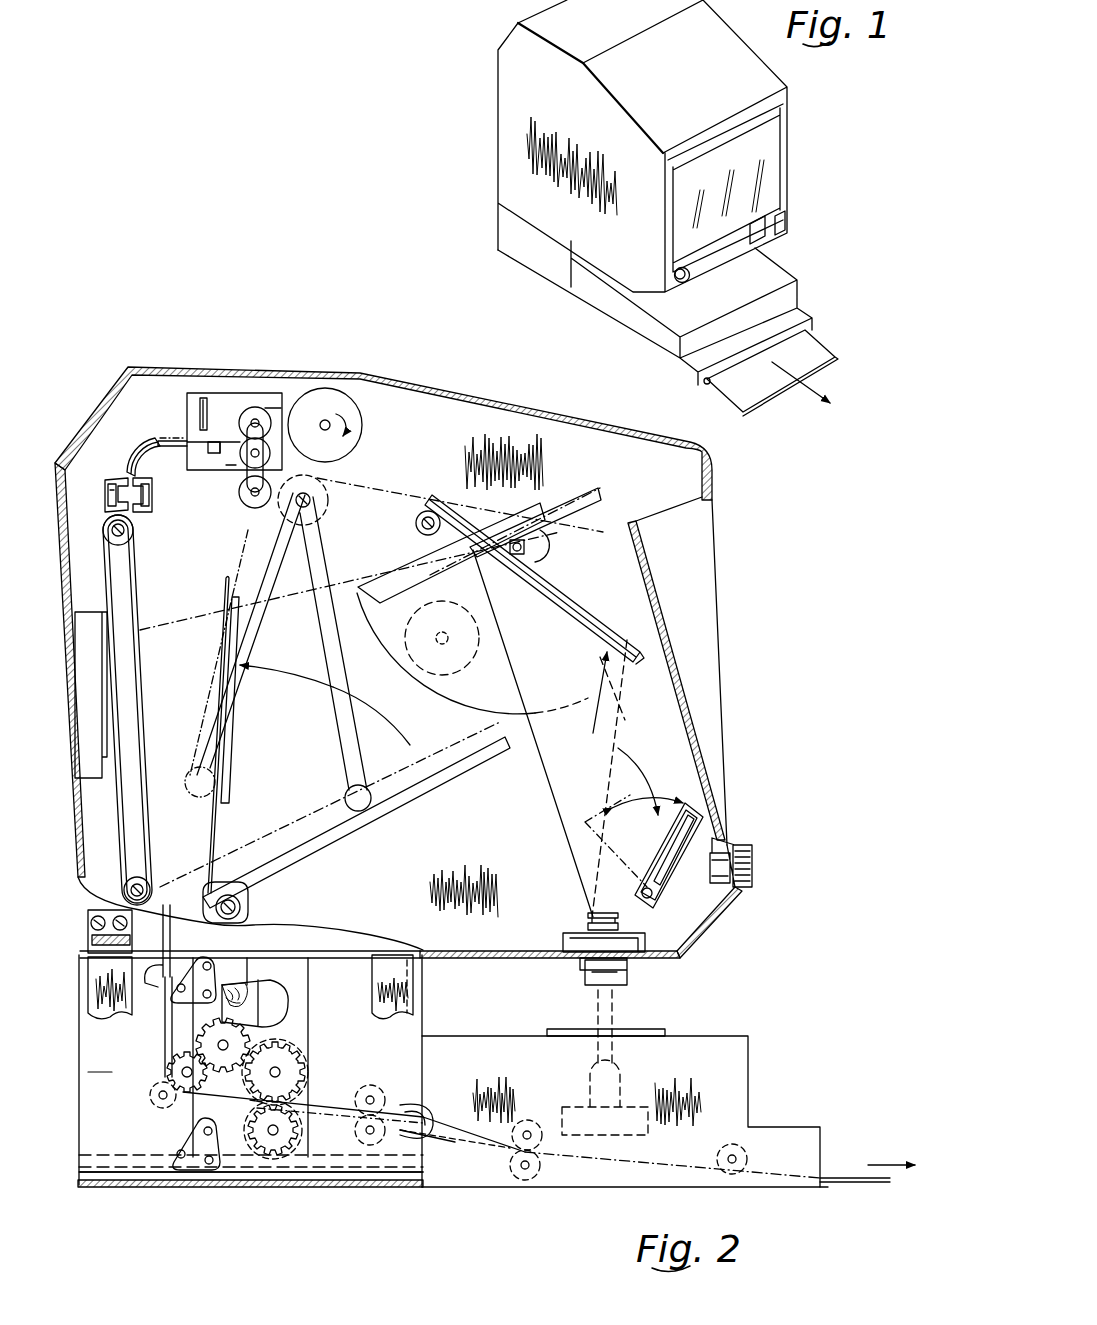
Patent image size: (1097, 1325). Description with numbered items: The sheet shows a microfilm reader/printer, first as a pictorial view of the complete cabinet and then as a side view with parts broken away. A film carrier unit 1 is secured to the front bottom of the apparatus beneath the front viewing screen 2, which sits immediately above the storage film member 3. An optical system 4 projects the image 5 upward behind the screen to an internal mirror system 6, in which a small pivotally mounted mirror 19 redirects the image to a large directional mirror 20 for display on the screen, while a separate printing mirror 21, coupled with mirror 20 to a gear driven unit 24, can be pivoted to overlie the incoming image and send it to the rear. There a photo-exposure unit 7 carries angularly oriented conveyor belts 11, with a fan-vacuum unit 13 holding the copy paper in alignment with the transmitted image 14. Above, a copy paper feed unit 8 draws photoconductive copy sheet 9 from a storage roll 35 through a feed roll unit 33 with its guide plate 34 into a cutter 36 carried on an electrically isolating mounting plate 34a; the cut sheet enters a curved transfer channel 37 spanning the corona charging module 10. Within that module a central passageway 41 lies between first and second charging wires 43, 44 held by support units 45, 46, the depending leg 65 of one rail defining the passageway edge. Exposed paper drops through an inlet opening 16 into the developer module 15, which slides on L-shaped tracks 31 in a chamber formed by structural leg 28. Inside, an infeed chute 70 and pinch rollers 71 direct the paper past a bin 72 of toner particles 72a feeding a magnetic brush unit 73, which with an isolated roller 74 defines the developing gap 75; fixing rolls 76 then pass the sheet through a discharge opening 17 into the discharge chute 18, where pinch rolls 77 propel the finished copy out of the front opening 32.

In FIG. 1, the film carrier unit 1 is at (772, 272).
In FIG. 2, the film carrier unit 1 is at (750, 1085).
In FIG. 1, the front viewing screen 2 is at (763, 184).
In FIG. 2, the front viewing screen 2 is at (680, 697).
In FIG. 2, the storage film member 3 is at (665, 1030).
In FIG. 2, the optical system 4 is at (580, 1068).
In FIG. 2, the image 5 is at (577, 867).
In FIG. 2, the internal mirror system 6 is at (530, 755).
In FIG. 2, the photo-exposure unit 7 is at (101, 587).
In FIG. 2, the copy paper feed unit 8 is at (228, 482).
In FIG. 1, the photoconductive copy sheet 9 is at (780, 377).
In FIG. 2, the photoconductive copy sheet 9 is at (168, 440).
In FIG. 2, the corona charging module 10 is at (113, 467).
In FIG. 2, the conveyor belts 11 is at (125, 687).
In FIG. 2, the fan-vacuum unit 13 is at (87, 688).
In FIG. 2, the transmitted image 14 is at (308, 810).
In FIG. 2, the developer module 15 is at (104, 1061).
In FIG. 2, the inlet opening 16 is at (185, 943).
In FIG. 2, the discharge opening 17 is at (422, 1120).
In FIG. 2, the discharge chute 18 is at (453, 1142).
In FIG. 2, the small pivotally mounted mirror 19 is at (700, 815).
In FIG. 2, the large directional mirror 20 is at (388, 818).
In FIG. 2, the printing mirror 21 is at (560, 605).
In FIG. 2, the gear driven unit 24 is at (398, 496).
In FIG. 2, the structural leg 28 is at (95, 978).
In FIG. 2, the L-shaped tracks 31 is at (117, 1172).
In FIG. 1, the opening 32 is at (707, 385).
In FIG. 2, the opening 32 is at (827, 1187).
In FIG. 2, the feed roll unit 33 is at (250, 410).
In FIG. 2, the guide plate 34 is at (218, 437).
In FIG. 2, the mounting plate 34a is at (272, 402).
In FIG. 2, the storage roll 35 is at (362, 430).
In FIG. 2, the cutter 36 is at (203, 391).
In FIG. 2, the transfer channel 37 is at (153, 440).
In FIG. 2, the central passageway 41 is at (130, 515).
In FIG. 2, the first charging wire 43 is at (115, 495).
In FIG. 2, the second charging wire 44 is at (140, 495).
In FIG. 2, the support unit 45 is at (100, 487).
In FIG. 2, the opposite support unit 46 is at (155, 487).
In FIG. 2, the depending leg 65 is at (143, 477).
In FIG. 2, the infeed chute 70 is at (152, 1000).
In FIG. 2, the pinch rollers 71 is at (155, 1075).
In FIG. 2, the toner bin 72 is at (257, 1000).
In FIG. 2, the toner particles 72a is at (245, 983).
In FIG. 2, the magnetic brush unit 73 is at (308, 1060).
In FIG. 2, the electrically isolated roller 74 is at (278, 1160).
In FIG. 2, the developing gap 75 is at (257, 1105).
In FIG. 2, the fixing rolls 76 is at (372, 1085).
In FIG. 2, the pinch rolls 77 is at (530, 1181).